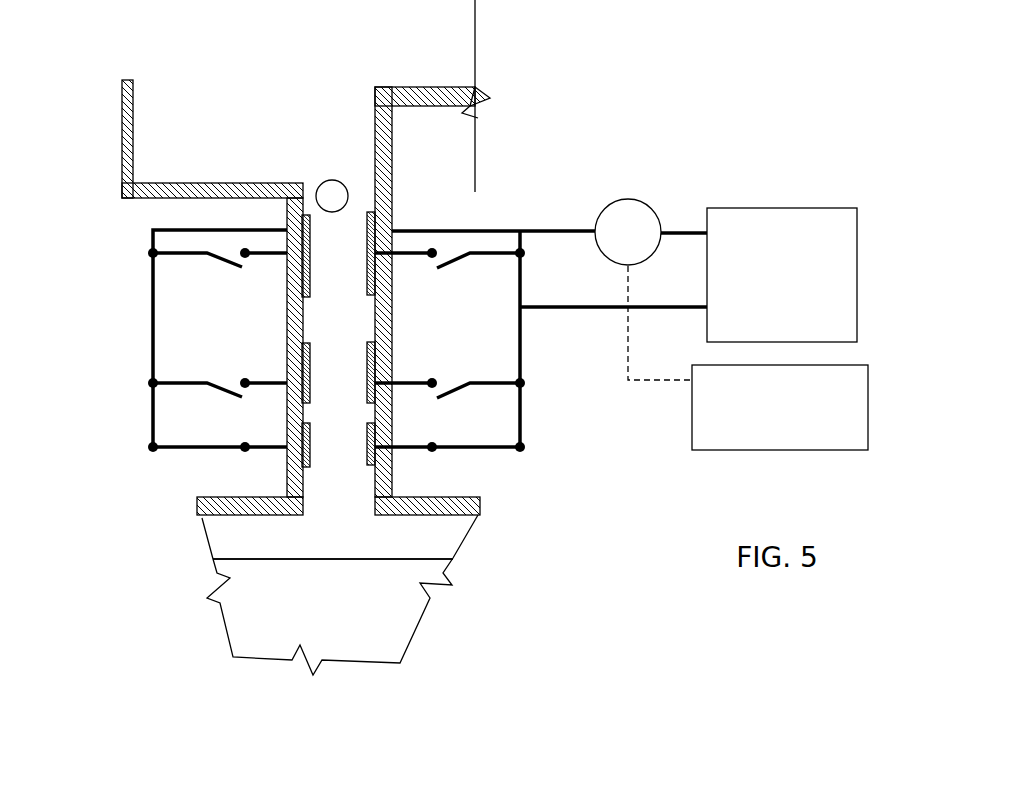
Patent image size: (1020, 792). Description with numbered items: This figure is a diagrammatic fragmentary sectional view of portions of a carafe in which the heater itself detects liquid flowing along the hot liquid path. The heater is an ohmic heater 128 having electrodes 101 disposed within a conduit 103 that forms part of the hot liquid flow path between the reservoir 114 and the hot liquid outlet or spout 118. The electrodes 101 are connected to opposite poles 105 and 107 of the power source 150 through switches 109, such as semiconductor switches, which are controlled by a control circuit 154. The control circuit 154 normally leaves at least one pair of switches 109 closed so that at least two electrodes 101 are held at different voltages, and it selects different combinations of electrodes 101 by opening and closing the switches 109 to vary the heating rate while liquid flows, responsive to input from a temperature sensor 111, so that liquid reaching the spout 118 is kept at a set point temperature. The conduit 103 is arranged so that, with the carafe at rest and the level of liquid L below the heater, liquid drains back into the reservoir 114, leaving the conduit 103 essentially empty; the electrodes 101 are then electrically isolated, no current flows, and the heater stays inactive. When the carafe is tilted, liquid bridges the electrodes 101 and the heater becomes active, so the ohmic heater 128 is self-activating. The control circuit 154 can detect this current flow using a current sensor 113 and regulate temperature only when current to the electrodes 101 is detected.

The electrodes 101 is at (287, 258).
The conduit 103 is at (315, 333).
The pole 105 is at (522, 423).
The pole 107 is at (148, 422).
The switches 109 is at (375, 245).
The temperature sensor 111 is at (346, 181).
The current sensor 113 is at (628, 207).
The reservoir 114 is at (462, 598).
The hot liquid outlet or spout 118 is at (290, 123).
The ohmic heater 128 is at (510, 211).
The power source 150 is at (797, 218).
The control circuit 154 is at (862, 393).
The level of liquid L is at (293, 559).